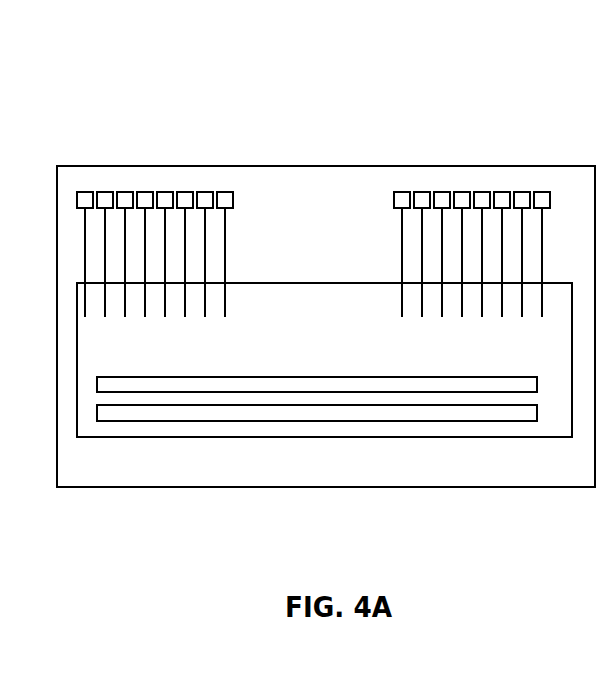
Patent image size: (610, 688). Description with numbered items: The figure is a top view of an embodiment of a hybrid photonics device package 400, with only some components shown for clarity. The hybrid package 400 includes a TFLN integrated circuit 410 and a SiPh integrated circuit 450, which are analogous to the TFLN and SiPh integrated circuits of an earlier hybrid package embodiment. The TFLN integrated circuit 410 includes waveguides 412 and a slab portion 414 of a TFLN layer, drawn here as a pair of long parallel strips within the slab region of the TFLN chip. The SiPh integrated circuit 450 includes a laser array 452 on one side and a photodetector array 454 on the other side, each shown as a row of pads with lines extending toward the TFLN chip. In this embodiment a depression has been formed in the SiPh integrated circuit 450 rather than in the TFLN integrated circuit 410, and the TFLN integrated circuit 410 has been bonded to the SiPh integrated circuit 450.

The hybrid photonics device package 400 is at (153, 90).
The SiPh integrated circuit 450 is at (273, 143).
The laser array 452 is at (197, 180).
The photodetector array 454 is at (453, 183).
The slab portion 414 is at (325, 324).
The TFLN integrated circuit 410 is at (396, 450).
The waveguides 412 is at (400, 372).